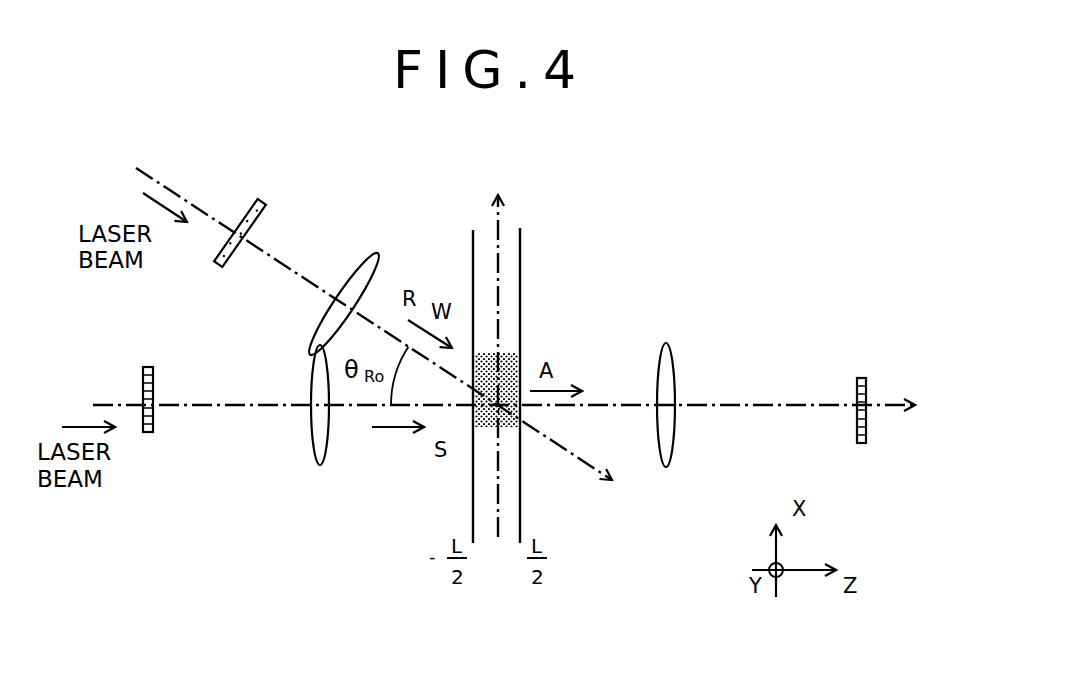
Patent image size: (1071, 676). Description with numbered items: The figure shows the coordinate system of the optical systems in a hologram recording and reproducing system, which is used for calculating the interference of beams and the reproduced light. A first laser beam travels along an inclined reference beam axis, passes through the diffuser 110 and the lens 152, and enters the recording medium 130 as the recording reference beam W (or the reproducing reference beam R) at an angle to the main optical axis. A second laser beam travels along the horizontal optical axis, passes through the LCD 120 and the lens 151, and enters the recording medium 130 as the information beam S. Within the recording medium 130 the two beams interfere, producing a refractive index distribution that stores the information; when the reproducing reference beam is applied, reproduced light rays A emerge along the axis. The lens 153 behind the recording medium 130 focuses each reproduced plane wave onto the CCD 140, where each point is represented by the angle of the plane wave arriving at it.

The diffuser 110 is at (243, 222).
The LCD 120 is at (153, 381).
The recording medium 130 is at (520, 283).
The CCD 140 is at (857, 388).
The lens 151 is at (321, 465).
The lens 152 is at (371, 262).
The lens 153 is at (673, 358).